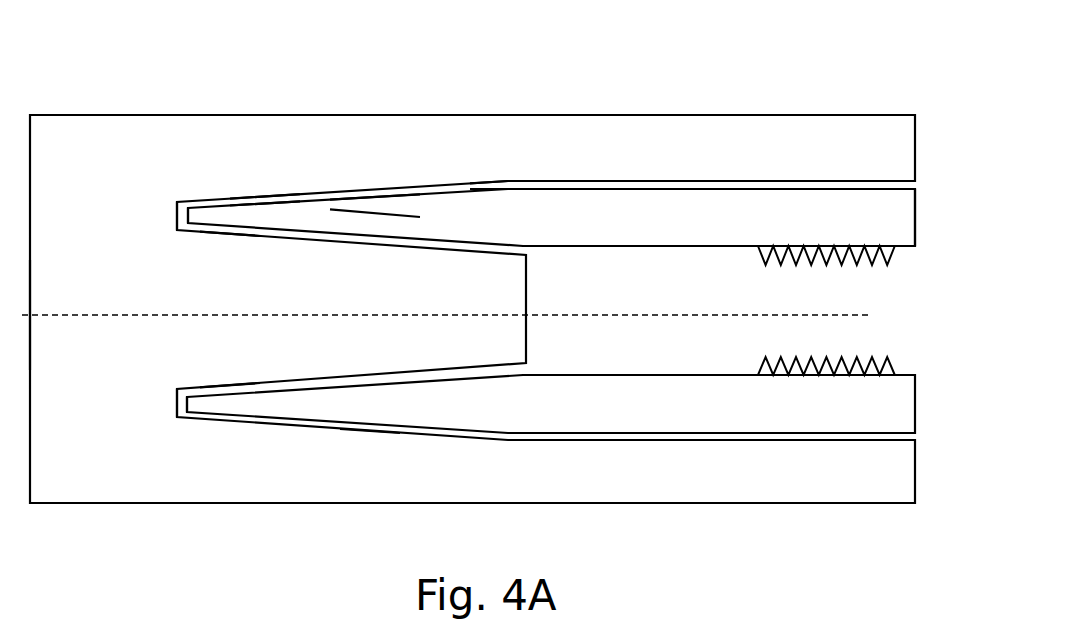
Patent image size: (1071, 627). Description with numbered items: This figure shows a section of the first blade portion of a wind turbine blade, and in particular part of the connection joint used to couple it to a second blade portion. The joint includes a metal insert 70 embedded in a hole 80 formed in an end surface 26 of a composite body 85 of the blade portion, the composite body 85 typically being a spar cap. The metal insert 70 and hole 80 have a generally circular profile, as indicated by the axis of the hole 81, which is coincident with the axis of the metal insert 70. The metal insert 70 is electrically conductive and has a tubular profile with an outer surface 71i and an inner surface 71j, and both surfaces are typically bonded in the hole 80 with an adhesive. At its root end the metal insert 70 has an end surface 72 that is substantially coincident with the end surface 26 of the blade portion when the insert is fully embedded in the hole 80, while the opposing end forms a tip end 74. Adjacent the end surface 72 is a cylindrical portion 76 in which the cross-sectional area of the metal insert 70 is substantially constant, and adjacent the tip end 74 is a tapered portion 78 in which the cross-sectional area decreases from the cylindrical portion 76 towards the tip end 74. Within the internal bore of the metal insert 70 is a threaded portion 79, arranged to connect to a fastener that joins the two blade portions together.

The end surface 26 is at (918, 144).
The metal insert 70 is at (677, 215).
The outer surface 71i is at (504, 190).
The inner surface 71j is at (238, 240).
The end surface 72 is at (916, 218).
The tip end 74 is at (190, 202).
The cylindrical portion 76 is at (599, 205).
The tapered portion 78 is at (371, 216).
The threaded portion 79 is at (760, 255).
The hole 80 is at (258, 192).
The axis of the hole 81 is at (866, 316).
The composite body 85 is at (110, 298).